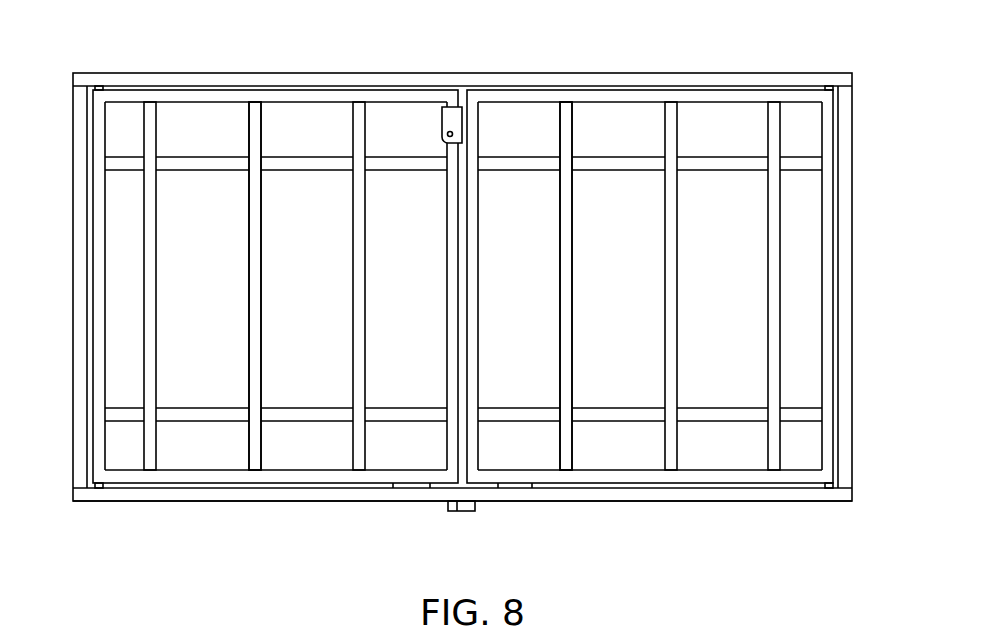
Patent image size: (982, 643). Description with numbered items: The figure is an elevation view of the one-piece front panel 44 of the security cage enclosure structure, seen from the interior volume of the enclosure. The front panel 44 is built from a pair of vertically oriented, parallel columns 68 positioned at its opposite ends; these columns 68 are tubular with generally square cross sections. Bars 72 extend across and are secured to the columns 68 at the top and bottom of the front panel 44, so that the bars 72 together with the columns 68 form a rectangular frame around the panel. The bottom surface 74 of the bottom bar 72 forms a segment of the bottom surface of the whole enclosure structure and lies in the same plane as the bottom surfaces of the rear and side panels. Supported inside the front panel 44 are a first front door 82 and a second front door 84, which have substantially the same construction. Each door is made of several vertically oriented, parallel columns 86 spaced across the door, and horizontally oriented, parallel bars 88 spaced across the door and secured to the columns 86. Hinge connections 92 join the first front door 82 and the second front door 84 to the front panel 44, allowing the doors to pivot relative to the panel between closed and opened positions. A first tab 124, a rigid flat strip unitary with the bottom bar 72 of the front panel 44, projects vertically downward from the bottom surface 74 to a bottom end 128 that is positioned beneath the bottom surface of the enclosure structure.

The front panel 44 is at (622, 62).
The columns 68 is at (80, 286).
The bars 72 is at (294, 80).
The bottom surface 74 is at (274, 502).
The first front door 82 is at (350, 246).
The second front door 84 is at (577, 246).
The columns 86 is at (262, 335).
The bars 88 is at (172, 105).
The hinge connections 92 is at (99, 86).
The first tab 124 is at (456, 511).
The bottom end 128 is at (468, 512).